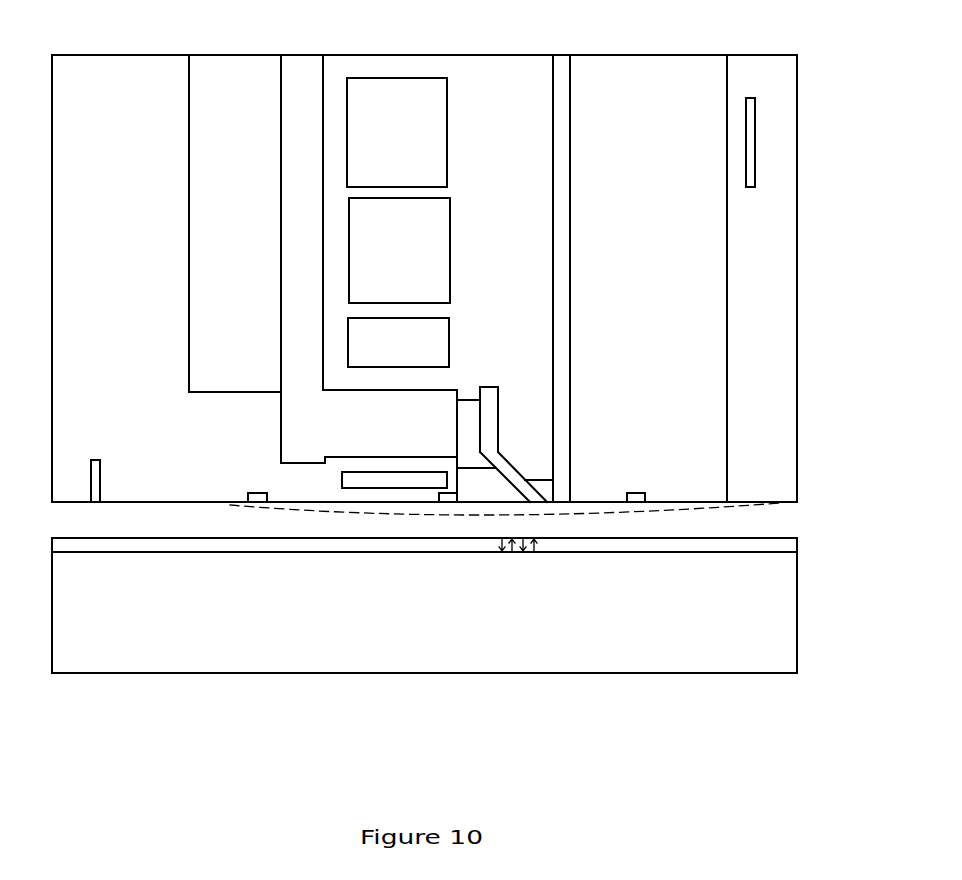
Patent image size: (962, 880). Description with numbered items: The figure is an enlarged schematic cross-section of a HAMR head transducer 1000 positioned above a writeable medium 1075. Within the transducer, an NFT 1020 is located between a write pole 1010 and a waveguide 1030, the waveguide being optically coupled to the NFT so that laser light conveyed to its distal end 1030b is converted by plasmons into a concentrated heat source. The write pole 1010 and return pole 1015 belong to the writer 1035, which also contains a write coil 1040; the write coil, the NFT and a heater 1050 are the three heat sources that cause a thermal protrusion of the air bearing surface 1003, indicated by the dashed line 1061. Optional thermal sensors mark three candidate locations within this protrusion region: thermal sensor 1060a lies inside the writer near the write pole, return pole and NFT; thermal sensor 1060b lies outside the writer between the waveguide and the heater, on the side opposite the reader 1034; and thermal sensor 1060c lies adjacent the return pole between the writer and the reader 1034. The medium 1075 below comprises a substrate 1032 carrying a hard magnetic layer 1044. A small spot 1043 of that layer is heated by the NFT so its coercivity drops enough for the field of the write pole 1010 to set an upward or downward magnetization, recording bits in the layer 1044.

The head transducer 1000 is at (680, 55).
The air bearing surface 1003 is at (63, 503).
The write pole 1010 is at (488, 395).
The return pole 1015 is at (281, 402).
The NFT 1020 is at (543, 482).
The waveguide 1030 is at (571, 398).
The distal end 1030b is at (571, 482).
The substrate 1032 is at (446, 623).
The reader 1034 is at (100, 472).
The writer 1035 is at (163, 167).
The write coil 1040 is at (450, 243).
The spot 1043 is at (540, 545).
The hard magnetic layer 1044 is at (797, 545).
The heater 1050 is at (750, 188).
The thermal sensor 1060a is at (447, 493).
The thermal sensor 1060b is at (637, 493).
The thermal sensor 1060c is at (255, 493).
The dashed line 1061 is at (717, 513).
The writeable medium 1075 is at (243, 720).